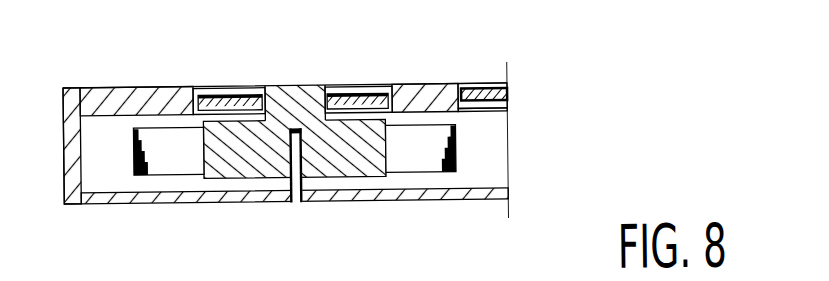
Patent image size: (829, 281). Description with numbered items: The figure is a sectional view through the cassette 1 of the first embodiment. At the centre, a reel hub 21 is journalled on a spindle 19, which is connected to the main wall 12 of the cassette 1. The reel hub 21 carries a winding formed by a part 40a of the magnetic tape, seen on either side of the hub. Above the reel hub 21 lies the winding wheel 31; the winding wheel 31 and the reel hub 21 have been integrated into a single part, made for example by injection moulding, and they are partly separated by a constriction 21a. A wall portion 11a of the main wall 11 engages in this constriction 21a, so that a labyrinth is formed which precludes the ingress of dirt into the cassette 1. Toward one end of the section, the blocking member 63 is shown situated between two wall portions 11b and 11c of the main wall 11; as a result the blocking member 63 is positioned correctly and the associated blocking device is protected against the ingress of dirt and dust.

The cassette 1 is at (56, 79).
The main wall 11 is at (100, 88).
The wall portion 11a is at (200, 128).
The wall portion 11b is at (480, 105).
The wall portion 11c is at (480, 105).
The main wall 12 is at (118, 205).
The spindle 19 is at (296, 186).
The reel hub 21 is at (244, 155).
The constriction 21a is at (266, 98).
The winding wheel 31 is at (229, 98).
The part of the magnetic tape 40a is at (172, 155).
The blocking member 63 is at (455, 97).